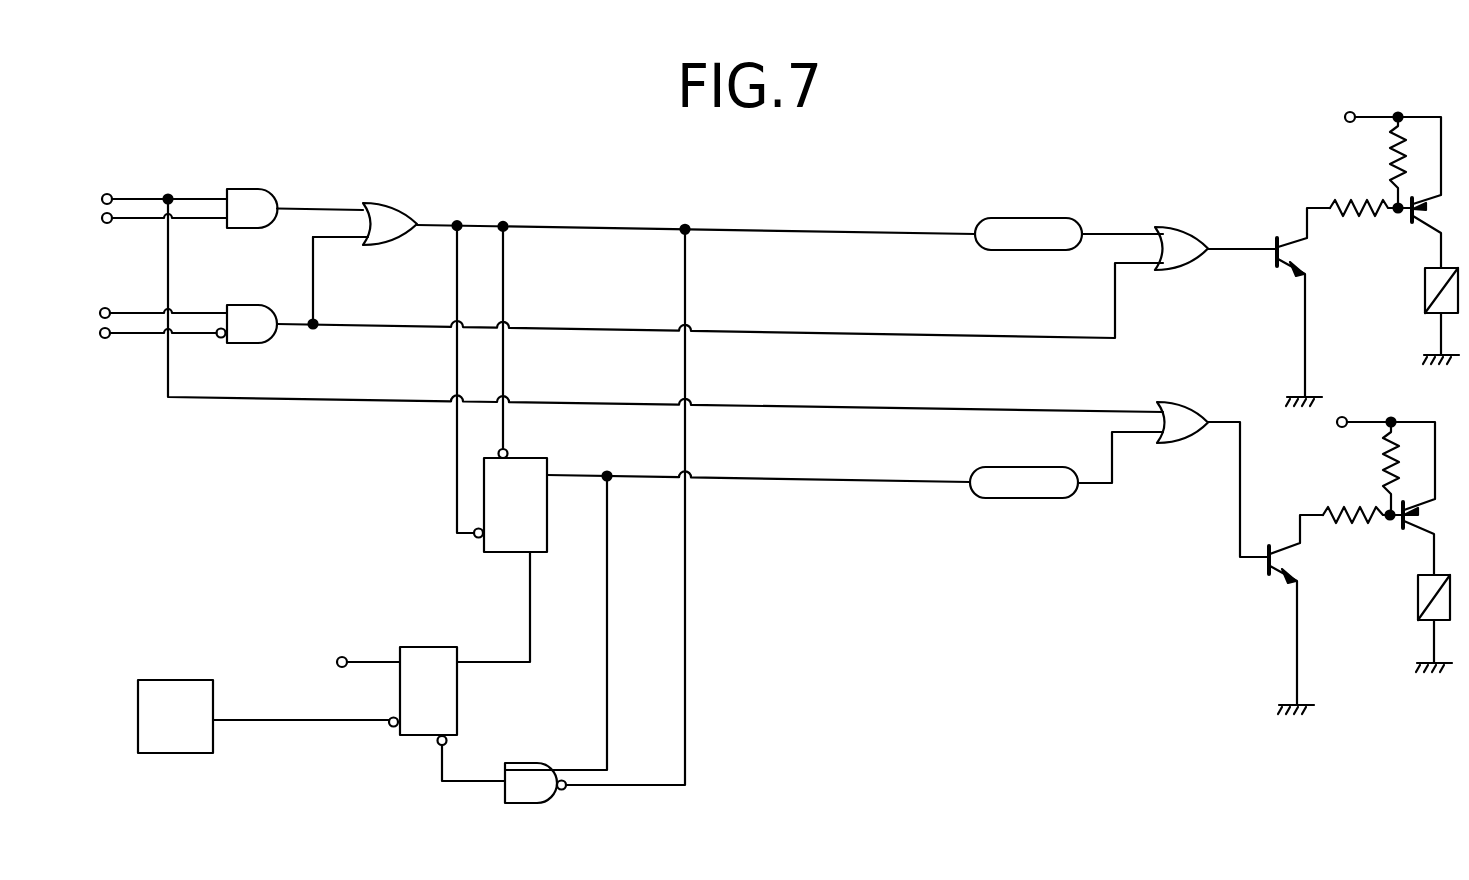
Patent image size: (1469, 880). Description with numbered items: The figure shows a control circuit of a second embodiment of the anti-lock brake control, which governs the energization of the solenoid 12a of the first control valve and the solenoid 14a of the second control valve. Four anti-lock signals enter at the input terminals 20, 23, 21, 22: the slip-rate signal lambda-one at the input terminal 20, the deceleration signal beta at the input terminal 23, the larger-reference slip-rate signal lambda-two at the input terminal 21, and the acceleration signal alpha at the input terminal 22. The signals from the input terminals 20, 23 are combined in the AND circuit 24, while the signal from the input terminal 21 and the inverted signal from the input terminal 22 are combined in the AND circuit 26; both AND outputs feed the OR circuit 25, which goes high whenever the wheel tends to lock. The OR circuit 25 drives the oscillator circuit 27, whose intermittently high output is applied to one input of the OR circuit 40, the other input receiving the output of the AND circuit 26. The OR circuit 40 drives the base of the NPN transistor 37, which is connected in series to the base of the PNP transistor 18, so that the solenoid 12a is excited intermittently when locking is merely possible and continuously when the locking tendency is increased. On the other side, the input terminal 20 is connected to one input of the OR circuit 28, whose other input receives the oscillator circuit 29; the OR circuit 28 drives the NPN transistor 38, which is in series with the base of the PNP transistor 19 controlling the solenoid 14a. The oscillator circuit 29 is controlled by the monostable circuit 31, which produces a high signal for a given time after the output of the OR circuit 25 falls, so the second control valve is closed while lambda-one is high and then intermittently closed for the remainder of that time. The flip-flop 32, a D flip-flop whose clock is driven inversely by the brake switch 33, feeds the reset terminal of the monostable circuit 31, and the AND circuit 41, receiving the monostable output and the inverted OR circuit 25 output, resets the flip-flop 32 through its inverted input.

The input terminal 20 is at (104, 195).
The input terminal 23 is at (104, 223).
The input terminal 21 is at (103, 306).
The input terminal 22 is at (102, 340).
The AND circuit 24 is at (252, 200).
The OR circuit 25 is at (390, 203).
The AND circuit 26 is at (262, 343).
The oscillator circuit 27 is at (1078, 218).
The OR circuit 40 is at (1193, 236).
The NPN transistor 37 is at (1272, 244).
The PNP transistor 18 is at (1408, 218).
The solenoid 12a is at (1425, 293).
The OR circuit 28 is at (1190, 412).
The oscillator circuit 29 is at (1056, 467).
The NPN transistor 38 is at (1263, 573).
The PNP transistor 19 is at (1400, 528).
The solenoid 14a is at (1418, 606).
The monostable circuit 31 is at (548, 506).
The flip-flop 32 is at (457, 687).
The brake switch 33 is at (190, 731).
The AND circuit 41 is at (540, 770).